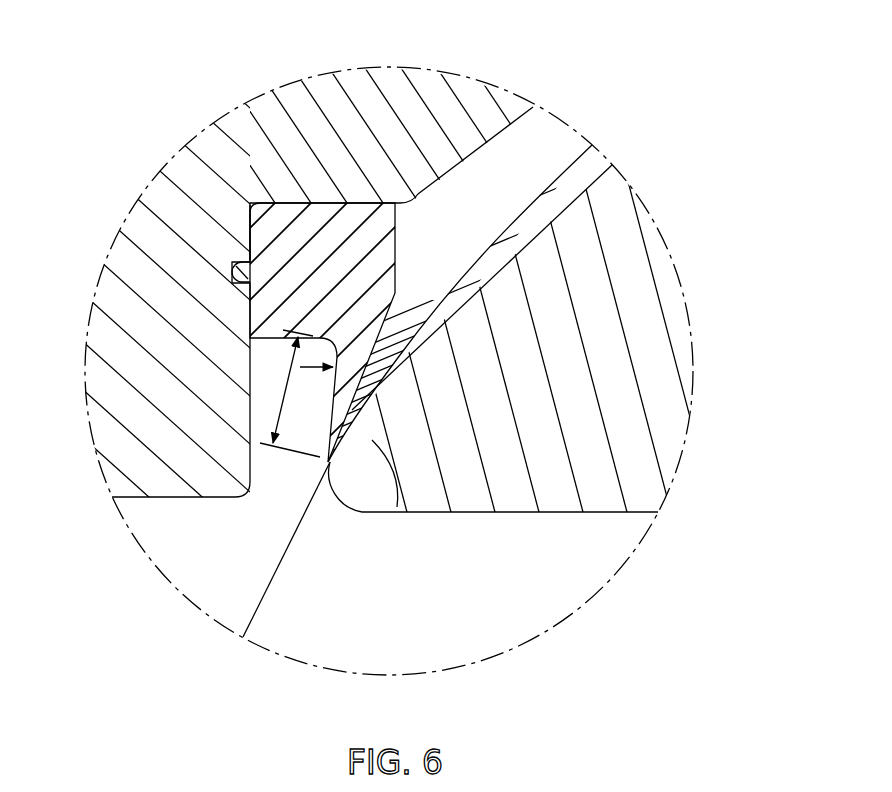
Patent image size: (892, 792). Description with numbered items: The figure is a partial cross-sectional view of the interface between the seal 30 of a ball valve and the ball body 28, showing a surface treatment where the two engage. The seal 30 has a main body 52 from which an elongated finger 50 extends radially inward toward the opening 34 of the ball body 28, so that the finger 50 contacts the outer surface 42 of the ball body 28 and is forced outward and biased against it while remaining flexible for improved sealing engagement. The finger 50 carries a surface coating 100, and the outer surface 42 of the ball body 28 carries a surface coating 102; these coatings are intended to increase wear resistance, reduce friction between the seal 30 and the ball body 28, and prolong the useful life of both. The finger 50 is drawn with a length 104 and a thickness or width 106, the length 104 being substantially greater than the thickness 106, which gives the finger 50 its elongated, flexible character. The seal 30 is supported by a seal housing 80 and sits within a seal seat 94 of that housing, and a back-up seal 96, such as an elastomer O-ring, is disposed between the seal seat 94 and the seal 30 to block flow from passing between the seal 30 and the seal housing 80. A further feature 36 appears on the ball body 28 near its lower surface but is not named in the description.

The ball body 28 is at (655, 345).
The seal 30 is at (425, 232).
The opening 34 is at (480, 617).
The bottom surface 36 is at (510, 513).
The outer surface 42 is at (393, 512).
The finger 50 is at (357, 363).
The main body 52 is at (306, 232).
The seal housing 80 is at (392, 90).
The seal seat 94 is at (253, 232).
The back-up seal 96 is at (232, 278).
The surface coating 100 is at (330, 433).
The surface coating 102 is at (342, 467).
The length 104 is at (299, 386).
The thickness 106 is at (380, 370).